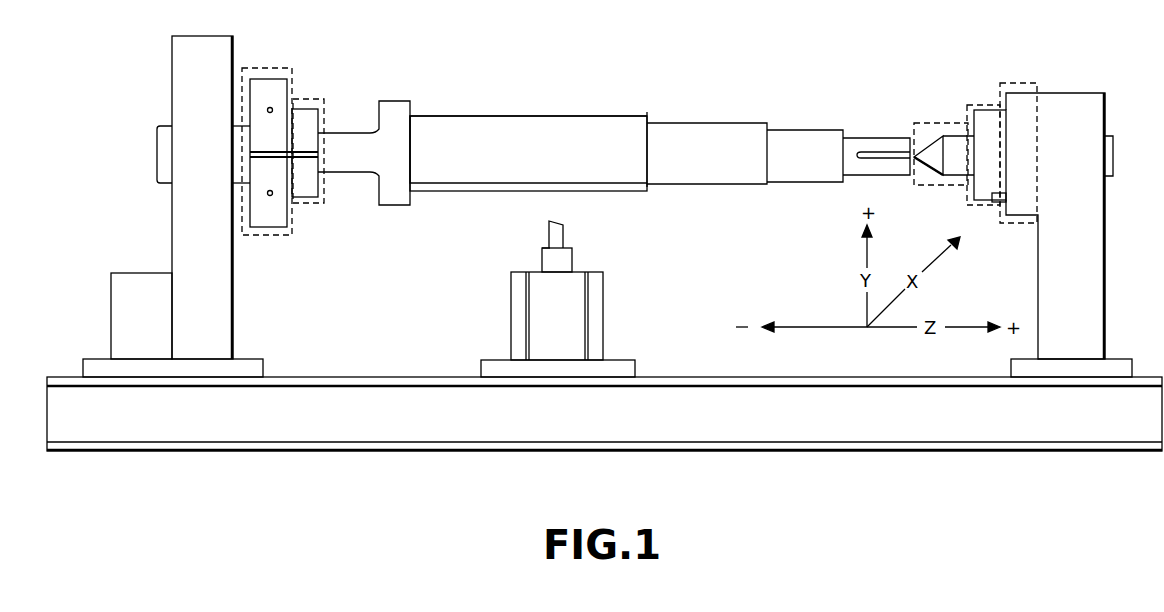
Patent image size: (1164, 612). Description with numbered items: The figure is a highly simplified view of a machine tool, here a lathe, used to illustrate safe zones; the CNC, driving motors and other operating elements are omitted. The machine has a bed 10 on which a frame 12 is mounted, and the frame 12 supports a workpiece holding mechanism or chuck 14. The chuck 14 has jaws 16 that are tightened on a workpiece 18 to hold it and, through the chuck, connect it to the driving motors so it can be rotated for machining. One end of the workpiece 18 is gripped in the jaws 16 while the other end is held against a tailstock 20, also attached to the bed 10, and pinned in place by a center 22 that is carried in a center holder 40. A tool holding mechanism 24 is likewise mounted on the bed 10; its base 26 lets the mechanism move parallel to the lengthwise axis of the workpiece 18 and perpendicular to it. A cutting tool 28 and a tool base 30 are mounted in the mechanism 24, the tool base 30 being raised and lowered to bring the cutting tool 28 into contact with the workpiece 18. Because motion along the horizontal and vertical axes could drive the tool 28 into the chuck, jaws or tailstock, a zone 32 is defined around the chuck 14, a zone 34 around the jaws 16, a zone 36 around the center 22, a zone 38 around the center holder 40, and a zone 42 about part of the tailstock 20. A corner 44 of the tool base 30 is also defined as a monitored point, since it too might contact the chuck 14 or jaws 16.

The bed 10 is at (349, 377).
The frame 12 is at (234, 276).
The chuck 14 is at (278, 230).
The jaws 16 is at (316, 198).
The workpiece 18 is at (516, 155).
The tailstock 20 is at (1106, 260).
The center 22 is at (947, 185).
The tool holding mechanism 24 is at (603, 310).
The base 26 is at (628, 363).
The cutting tool 28 is at (564, 236).
The tool base 30 is at (570, 260).
The zone 32 is at (269, 68).
The zone 34 is at (318, 99).
The zone 36 is at (924, 123).
The zone 38 is at (976, 105).
The center holder 40 is at (992, 202).
The zone 42 is at (1020, 83).
The corner 44 is at (538, 247).